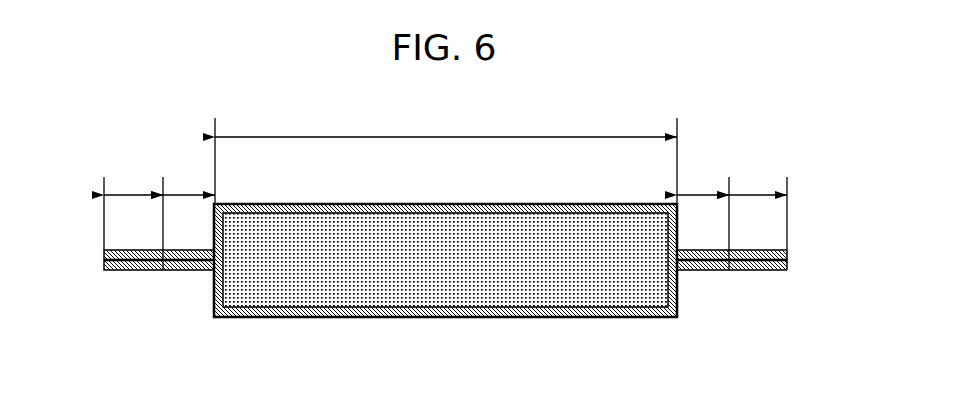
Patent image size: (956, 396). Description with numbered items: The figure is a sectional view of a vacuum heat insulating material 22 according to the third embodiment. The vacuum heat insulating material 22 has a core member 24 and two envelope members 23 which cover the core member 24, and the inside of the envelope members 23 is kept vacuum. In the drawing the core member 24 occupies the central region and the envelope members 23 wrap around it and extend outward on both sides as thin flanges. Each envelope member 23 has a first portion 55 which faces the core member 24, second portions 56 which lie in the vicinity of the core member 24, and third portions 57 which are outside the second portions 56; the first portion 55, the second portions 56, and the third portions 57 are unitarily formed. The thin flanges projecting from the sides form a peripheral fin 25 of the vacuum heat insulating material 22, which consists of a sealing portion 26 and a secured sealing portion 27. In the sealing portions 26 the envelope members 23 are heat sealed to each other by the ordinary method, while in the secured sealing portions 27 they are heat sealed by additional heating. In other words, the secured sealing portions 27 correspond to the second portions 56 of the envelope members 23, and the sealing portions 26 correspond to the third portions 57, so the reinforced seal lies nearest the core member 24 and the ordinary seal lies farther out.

The vacuum heat insulating material 22 is at (445, 265).
The envelope member 23 is at (588, 204).
The core member 24 is at (480, 272).
The peripheral fin 25 is at (456, 304).
The sealing portion 26 is at (762, 284).
The secured sealing portion 27 is at (702, 270).
The first portion 55 is at (446, 157).
The second portion 56 is at (446, 182).
The third portion 57 is at (445, 219).